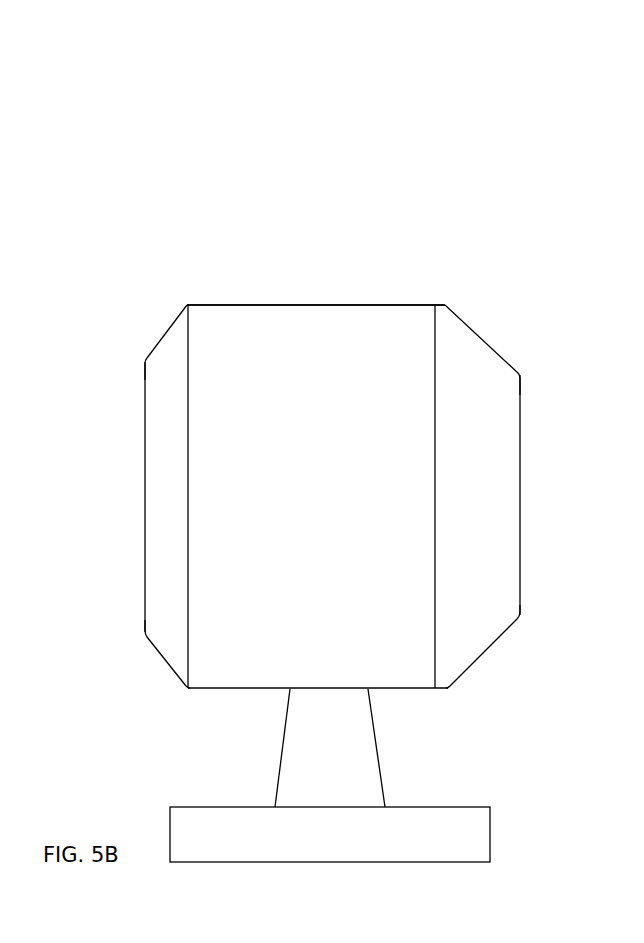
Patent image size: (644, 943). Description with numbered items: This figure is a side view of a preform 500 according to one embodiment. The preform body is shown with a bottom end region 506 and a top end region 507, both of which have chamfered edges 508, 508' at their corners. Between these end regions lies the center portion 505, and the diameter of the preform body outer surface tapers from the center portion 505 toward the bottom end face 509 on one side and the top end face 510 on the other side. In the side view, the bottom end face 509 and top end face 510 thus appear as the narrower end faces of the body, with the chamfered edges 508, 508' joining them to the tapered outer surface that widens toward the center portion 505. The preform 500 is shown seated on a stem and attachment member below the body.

The preform 500 is at (367, 130).
The center portion 505 is at (433, 290).
The bottom end region 506 is at (143, 338).
The top end region 507 is at (523, 363).
The chamfered edge 508 is at (143, 669).
The chamfered edge 508' is at (533, 646).
The bottom end face 509 is at (146, 485).
The top end face 510 is at (522, 495).